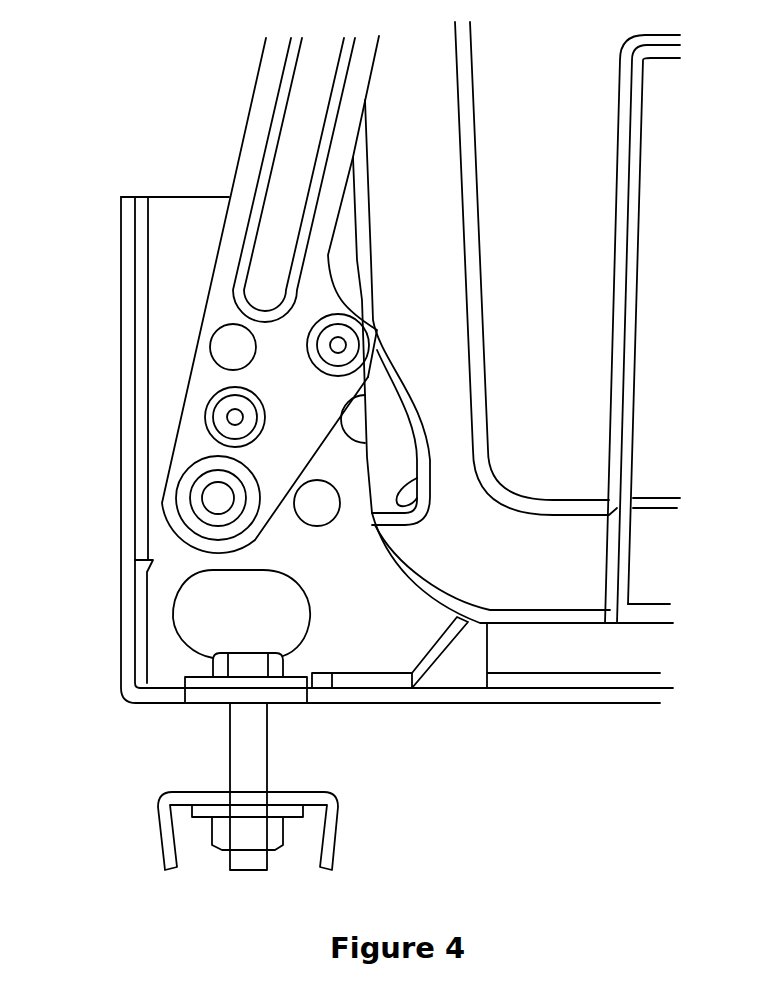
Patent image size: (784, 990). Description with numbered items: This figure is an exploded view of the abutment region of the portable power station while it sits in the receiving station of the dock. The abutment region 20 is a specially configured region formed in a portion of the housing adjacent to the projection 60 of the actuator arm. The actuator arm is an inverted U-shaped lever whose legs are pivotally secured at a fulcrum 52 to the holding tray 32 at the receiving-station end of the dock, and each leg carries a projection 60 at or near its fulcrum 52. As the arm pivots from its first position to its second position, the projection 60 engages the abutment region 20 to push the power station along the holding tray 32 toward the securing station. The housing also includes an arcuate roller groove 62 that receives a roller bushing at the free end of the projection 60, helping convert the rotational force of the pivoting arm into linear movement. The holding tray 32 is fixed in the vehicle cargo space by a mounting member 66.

The abutment region 20 is at (427, 433).
The holding tray 32 is at (128, 605).
The fulcrum 52 is at (217, 497).
The projection 60 is at (338, 345).
The arcuate roller groove 62 is at (395, 503).
The mounting member 66 is at (243, 742).